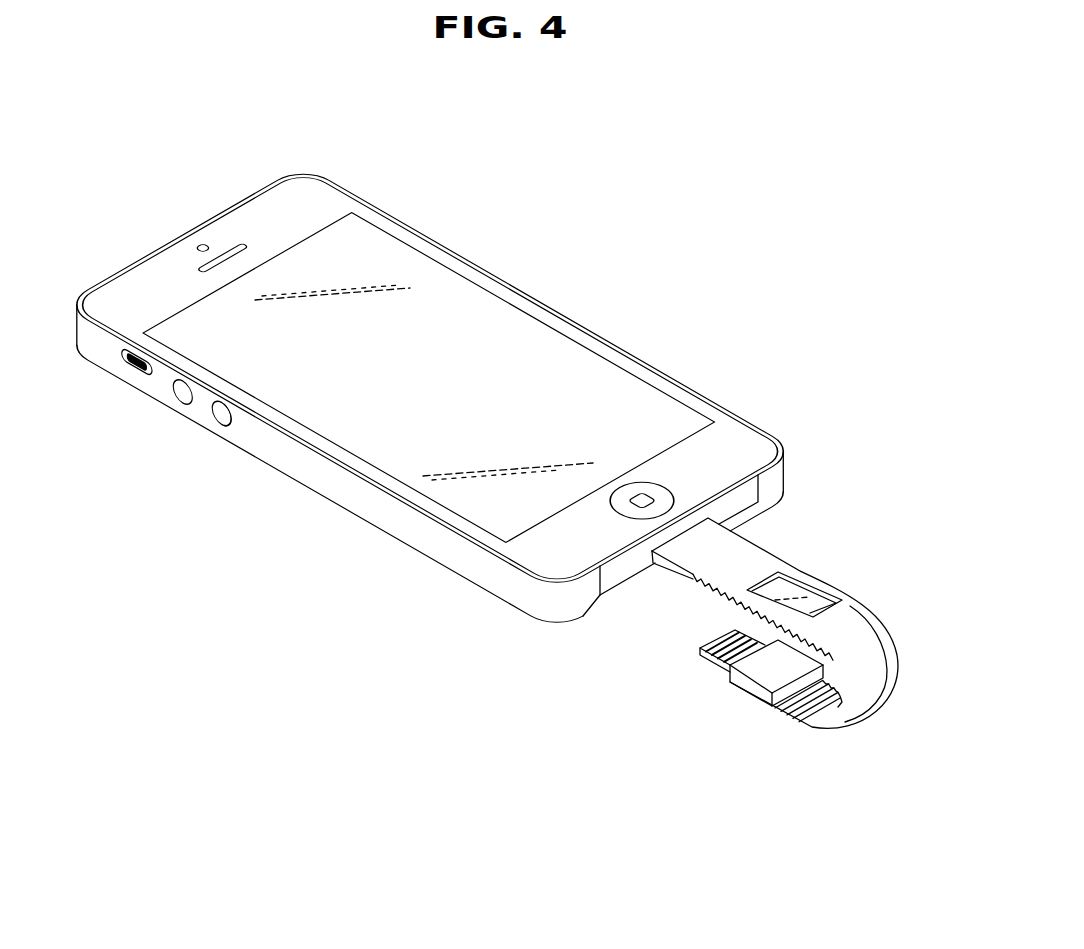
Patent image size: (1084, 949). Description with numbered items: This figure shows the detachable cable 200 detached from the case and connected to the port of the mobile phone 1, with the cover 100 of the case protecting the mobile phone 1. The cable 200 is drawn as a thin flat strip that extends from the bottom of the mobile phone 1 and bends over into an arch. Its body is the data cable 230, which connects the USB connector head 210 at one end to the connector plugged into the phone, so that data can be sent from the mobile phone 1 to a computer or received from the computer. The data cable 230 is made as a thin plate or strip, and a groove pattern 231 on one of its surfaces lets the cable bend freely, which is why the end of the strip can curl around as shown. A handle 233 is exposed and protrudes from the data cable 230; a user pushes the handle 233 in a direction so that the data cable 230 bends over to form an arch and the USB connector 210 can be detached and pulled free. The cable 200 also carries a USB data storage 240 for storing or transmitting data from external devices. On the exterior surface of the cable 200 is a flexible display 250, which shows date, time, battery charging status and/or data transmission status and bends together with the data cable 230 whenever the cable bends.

The mobile phone 1 is at (497, 325).
The cover 100 is at (582, 303).
The detachable cable 200 is at (697, 730).
The USB connector head 210 is at (698, 650).
The data cable 230 is at (867, 625).
The groove pattern 231 is at (800, 725).
The handle 233 is at (748, 695).
The USB data storage 240 is at (760, 672).
The flexible display 250 is at (832, 613).